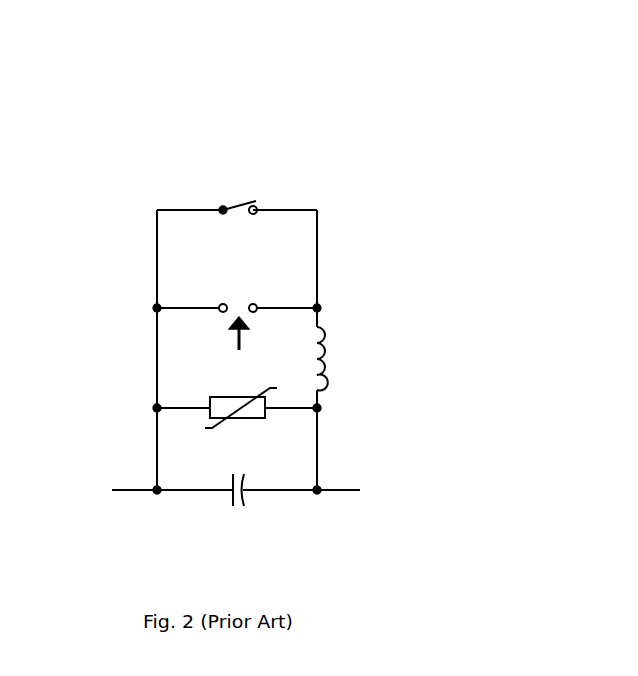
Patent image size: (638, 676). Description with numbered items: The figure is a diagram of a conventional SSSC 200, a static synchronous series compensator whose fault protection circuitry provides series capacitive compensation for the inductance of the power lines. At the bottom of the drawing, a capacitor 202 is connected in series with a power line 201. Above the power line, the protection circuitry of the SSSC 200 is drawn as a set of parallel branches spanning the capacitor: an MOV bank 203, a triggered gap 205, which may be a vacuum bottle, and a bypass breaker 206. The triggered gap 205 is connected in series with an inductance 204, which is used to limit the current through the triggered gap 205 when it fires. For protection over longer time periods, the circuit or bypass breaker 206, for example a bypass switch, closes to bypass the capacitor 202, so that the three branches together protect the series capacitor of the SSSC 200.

The SSSC 200 is at (333, 168).
The power line 201 is at (132, 492).
The capacitor 202 is at (237, 518).
The MOV bank 203 is at (252, 428).
The inductance 204 is at (340, 355).
The triggered gap 205 is at (225, 326).
The bypass breaker 206 is at (237, 222).